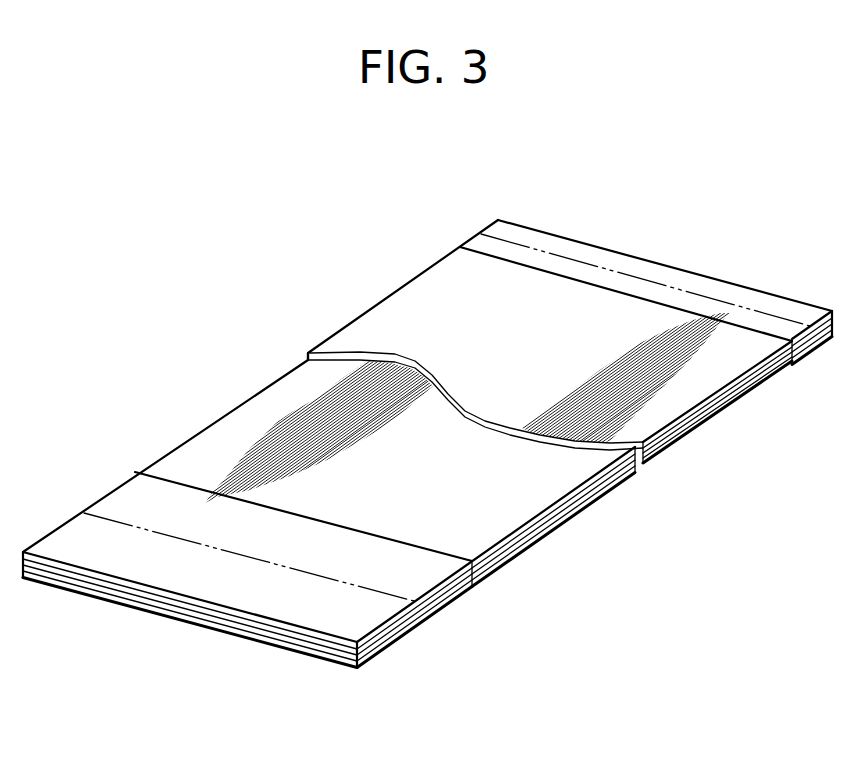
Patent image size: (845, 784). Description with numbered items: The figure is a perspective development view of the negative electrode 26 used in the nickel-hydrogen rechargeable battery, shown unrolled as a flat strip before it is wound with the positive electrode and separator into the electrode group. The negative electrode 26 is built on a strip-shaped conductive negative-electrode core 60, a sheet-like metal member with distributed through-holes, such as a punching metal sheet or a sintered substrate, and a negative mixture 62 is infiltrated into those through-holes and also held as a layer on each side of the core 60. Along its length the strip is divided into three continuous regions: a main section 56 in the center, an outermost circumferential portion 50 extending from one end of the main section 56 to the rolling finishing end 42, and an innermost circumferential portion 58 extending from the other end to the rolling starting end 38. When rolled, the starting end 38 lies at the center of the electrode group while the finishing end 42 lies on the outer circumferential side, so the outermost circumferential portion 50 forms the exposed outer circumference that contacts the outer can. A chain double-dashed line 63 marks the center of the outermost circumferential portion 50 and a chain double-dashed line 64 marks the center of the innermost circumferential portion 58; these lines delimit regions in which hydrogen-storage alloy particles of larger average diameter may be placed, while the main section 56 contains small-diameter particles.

The negative electrode 26 is at (278, 265).
The first end (rolling starting end) of the negative electrode 38 is at (660, 262).
The second end (rolling finishing end) of the negative electrode 42 is at (153, 587).
The outermost circumferential portion 50 is at (122, 463).
The main section 56 is at (435, 245).
The innermost circumferential portion 58 is at (485, 213).
The negative-electrode core 60 is at (538, 532).
The negative mixture 62 is at (607, 477).
The chain double-dashed line (center of outermost circumferential portion) 63 is at (260, 560).
The chain double-dashed line (center of innermost circumferential portion) 64 is at (568, 258).